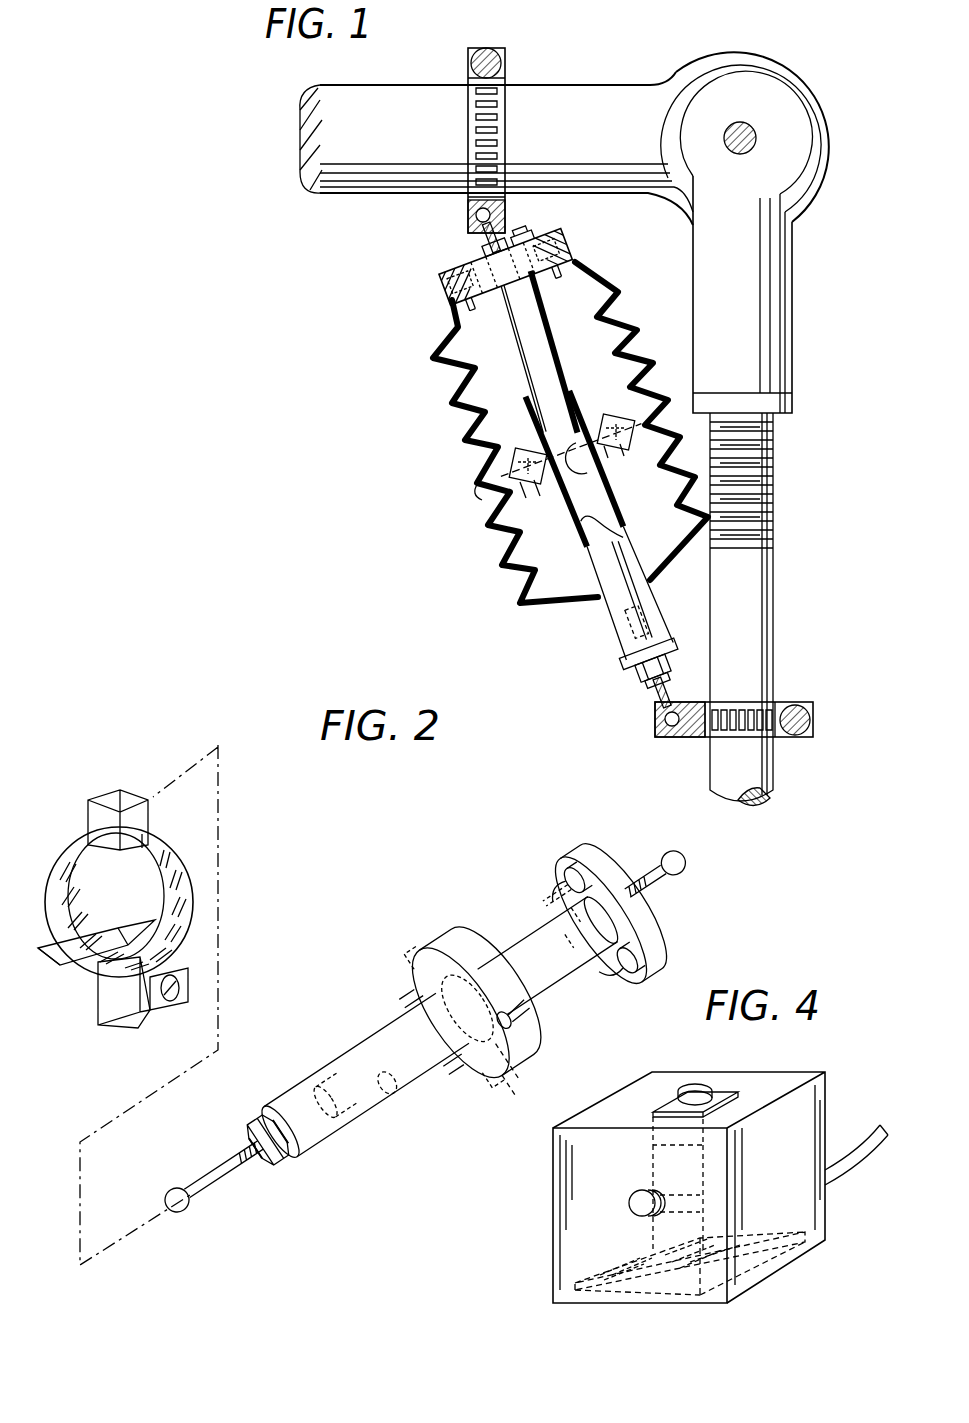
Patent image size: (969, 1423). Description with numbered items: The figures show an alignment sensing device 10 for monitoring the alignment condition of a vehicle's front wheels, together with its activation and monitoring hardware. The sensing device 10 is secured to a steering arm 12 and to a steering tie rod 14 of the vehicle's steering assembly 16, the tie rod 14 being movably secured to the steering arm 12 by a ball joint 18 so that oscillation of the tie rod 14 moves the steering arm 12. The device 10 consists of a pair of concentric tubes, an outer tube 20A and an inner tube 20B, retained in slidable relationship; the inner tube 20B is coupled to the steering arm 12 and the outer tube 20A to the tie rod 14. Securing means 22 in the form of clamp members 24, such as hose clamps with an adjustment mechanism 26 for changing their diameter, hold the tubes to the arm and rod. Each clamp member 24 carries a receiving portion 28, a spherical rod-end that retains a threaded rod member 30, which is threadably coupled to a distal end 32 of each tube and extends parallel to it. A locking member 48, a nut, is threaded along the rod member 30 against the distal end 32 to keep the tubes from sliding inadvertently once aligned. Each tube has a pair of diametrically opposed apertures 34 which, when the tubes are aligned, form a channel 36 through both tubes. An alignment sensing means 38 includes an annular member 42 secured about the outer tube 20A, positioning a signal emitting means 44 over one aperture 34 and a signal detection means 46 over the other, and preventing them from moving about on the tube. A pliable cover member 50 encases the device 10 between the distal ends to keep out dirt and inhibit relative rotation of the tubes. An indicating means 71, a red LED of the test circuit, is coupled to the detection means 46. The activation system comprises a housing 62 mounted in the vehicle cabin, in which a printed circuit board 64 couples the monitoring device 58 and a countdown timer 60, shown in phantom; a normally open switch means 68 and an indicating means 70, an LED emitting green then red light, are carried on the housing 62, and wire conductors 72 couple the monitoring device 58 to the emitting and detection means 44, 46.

In FIG. 1, the alignment sensing device 10 is at (440, 438).
In FIG. 2, the alignment sensing device 10 is at (428, 940).
In FIG. 1, the steering arm 12 is at (585, 95).
In FIG. 1, the steering tie rod 14 is at (745, 605).
In FIG. 1, the steering assembly 16 is at (808, 318).
In FIG. 1, the ball joint 18 is at (770, 130).
In FIG. 1, the outer tube 20A is at (612, 615).
In FIG. 2, the outer tube 20A is at (335, 1125).
In FIG. 1, the inner tube 20B is at (468, 385).
In FIG. 2, the inner tube 20B is at (535, 915).
In FIG. 1, the securing means 22 is at (462, 127).
In FIG. 2, the securing means 22 is at (42, 838).
In FIG. 1, the clamp member 24 is at (497, 152).
In FIG. 2, the clamp member 24 is at (195, 910).
In FIG. 1, the adjustment mechanism 26 is at (486, 48).
In FIG. 2, the adjustment mechanism 26 is at (108, 1000).
In FIG. 1, the receiving portion 28 is at (472, 212).
In FIG. 2, the receiving portion 28 is at (100, 798).
In FIG. 1, the threaded rod member 30 is at (488, 238).
In FIG. 2, the threaded rod member 30 is at (215, 1178).
In FIG. 1, the distal end 32 is at (664, 636).
In FIG. 2, the distal end 32 is at (255, 1112).
In FIG. 1, the apertures 34 is at (592, 440).
In FIG. 2, the apertures 34 is at (468, 1072).
In FIG. 1, the channel 36 is at (598, 472).
In FIG. 1, the alignment sensing means 38 is at (524, 452).
In FIG. 2, the alignment sensing means 38 is at (476, 942).
In FIG. 1, the annular member 42 is at (490, 290).
In FIG. 2, the annular member 42 is at (628, 872).
In FIG. 1, the signal emitting means 44 is at (624, 368).
In FIG. 2, the signal emitting means 44 is at (530, 1035).
In FIG. 1, the signal detection means 46 is at (505, 458).
In FIG. 2, the signal detection means 46 is at (408, 963).
In FIG. 1, the locking member 48 is at (512, 240).
In FIG. 2, the locking member 48 is at (245, 1135).
In FIG. 1, the pliable cover member 50 is at (485, 528).
In FIG. 4, the monitoring device 58 is at (690, 1270).
In FIG. 4, the countdown timer 60 is at (615, 1270).
In FIG. 4, the housing 62 is at (553, 1180).
In FIG. 4, the printed circuit board 64 is at (778, 1245).
In FIG. 1, the switch means 68 is at (548, 232).
In FIG. 2, the switch means 68 is at (588, 852).
In FIG. 4, the switch means 68 is at (700, 1095).
In FIG. 4, the indicating means 70 is at (636, 1215).
In FIG. 1, the indicating means 71 is at (445, 270).
In FIG. 2, the indicating means 71 is at (672, 938).
In FIG. 4, the wire conductors 72 is at (855, 1140).